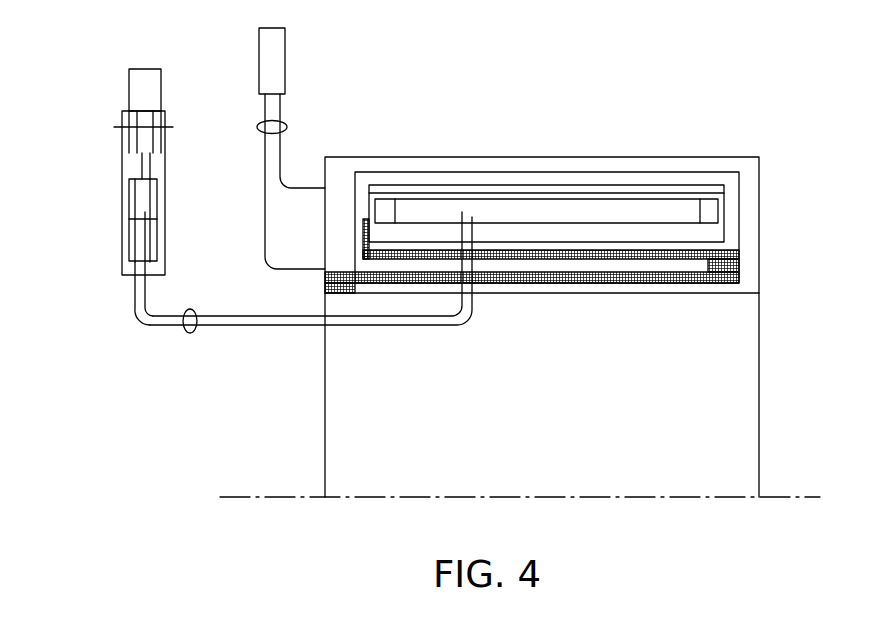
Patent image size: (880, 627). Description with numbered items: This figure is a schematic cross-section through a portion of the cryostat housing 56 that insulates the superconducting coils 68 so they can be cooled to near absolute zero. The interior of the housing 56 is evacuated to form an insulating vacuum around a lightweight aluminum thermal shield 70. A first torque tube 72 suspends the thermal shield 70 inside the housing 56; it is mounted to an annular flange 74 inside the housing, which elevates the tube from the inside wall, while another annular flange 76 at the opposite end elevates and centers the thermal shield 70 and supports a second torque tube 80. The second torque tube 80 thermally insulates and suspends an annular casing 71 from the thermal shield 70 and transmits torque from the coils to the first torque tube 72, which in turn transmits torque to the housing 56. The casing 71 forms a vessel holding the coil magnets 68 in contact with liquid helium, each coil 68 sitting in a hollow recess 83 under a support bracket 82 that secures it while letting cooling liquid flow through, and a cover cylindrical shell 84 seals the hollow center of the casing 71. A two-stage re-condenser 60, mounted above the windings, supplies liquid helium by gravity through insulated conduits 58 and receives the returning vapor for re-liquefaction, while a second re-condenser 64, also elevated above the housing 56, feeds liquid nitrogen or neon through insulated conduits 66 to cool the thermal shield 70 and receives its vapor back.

The cryostat housing 56 is at (760, 193).
The insulated conduits 58 is at (189, 333).
The two-stage re-condenser 60 is at (122, 217).
The second re-condenser 64 is at (259, 72).
The insulated conduits 66 is at (287, 127).
The superconducting coils 68 is at (383, 212).
The thermal shield 70 is at (733, 172).
The annular casing 71 is at (712, 237).
The first torque tube 72 is at (541, 278).
The annular flange 74 is at (325, 285).
The annular flange 76 is at (739, 267).
The second torque tube 80 is at (645, 249).
The support bracket 82 is at (394, 189).
The hollow recesses 83 is at (540, 212).
The cover cylindrical shell 84 is at (609, 190).